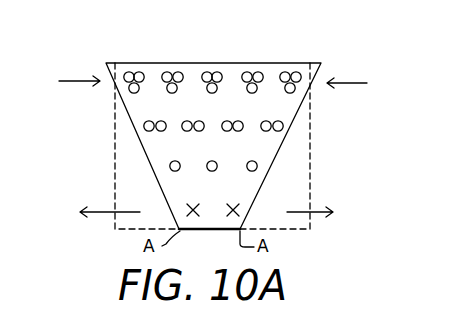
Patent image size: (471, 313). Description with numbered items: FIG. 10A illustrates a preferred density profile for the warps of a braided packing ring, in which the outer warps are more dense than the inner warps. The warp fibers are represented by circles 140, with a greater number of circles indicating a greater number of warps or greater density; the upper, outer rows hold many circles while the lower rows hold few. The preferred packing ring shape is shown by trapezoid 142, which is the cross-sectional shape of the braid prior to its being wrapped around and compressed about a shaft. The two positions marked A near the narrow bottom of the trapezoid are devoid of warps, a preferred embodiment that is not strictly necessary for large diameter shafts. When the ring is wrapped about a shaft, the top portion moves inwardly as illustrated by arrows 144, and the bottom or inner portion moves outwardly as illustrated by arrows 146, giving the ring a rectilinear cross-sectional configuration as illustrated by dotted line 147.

The circles 140 is at (137, 72).
The trapezoid 142 is at (305, 113).
The arrows 144 is at (78, 81).
The arrows 146 is at (100, 212).
The dotted line 147 is at (115, 142).